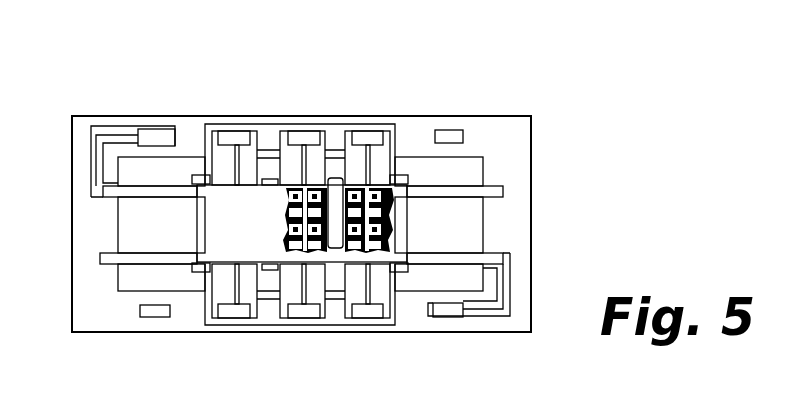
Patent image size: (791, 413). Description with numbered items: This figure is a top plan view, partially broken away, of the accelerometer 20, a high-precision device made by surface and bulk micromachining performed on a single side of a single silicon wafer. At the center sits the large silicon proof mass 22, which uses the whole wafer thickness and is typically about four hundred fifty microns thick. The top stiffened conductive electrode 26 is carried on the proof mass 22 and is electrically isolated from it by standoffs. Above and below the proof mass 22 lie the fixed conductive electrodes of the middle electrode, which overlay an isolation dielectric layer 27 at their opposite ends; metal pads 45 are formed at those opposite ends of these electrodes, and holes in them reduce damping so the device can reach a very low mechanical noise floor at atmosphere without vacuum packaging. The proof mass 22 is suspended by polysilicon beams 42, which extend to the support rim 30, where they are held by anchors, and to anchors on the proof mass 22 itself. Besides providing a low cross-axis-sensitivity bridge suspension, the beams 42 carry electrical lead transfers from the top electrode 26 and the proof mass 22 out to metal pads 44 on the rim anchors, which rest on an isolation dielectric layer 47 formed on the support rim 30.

The accelerometer 20 is at (336, 166).
The proof mass 22 is at (188, 276).
The top stiffened conductive electrode 26 is at (214, 192).
The isolation dielectric layer 27 is at (270, 143).
The support rim 30 is at (518, 116).
The polysilicon beams 42 is at (147, 253).
The metal pads 44 is at (161, 129).
The metal pads 45 is at (234, 131).
The isolation dielectric layer 47 is at (91, 197).